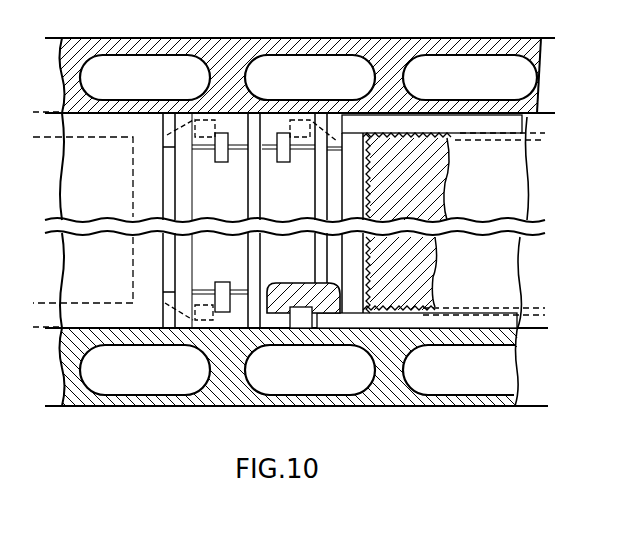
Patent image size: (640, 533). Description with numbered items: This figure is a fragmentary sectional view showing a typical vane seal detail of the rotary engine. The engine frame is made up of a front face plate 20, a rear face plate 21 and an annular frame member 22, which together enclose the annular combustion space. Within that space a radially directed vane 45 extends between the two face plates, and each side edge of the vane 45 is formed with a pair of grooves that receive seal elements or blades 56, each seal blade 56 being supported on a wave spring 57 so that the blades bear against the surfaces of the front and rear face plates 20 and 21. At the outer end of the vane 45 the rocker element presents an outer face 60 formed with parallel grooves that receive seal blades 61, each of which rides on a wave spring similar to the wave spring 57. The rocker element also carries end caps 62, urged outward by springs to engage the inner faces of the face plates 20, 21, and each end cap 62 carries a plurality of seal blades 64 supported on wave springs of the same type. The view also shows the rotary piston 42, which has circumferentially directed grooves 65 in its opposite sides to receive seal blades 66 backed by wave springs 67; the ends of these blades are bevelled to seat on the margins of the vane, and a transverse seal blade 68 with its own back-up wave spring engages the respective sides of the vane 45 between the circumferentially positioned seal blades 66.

The front face plate 20 is at (412, 406).
The rear face plate 21 is at (342, 38).
The annular frame member 22 is at (78, 163).
The rotary piston 42 is at (66, 271).
The vane 45 is at (303, 281).
The seal element 56 is at (298, 127).
The wave spring 57 is at (443, 137).
The outer face 60 is at (208, 205).
The seal blade 61 is at (248, 197).
The end cap 62 is at (167, 133).
The seal blade 64 is at (282, 150).
The groove 65 is at (530, 123).
The seal blade 66 is at (398, 125).
The back up wave spring 67 is at (500, 140).
The transverse seal blade 68 is at (352, 248).